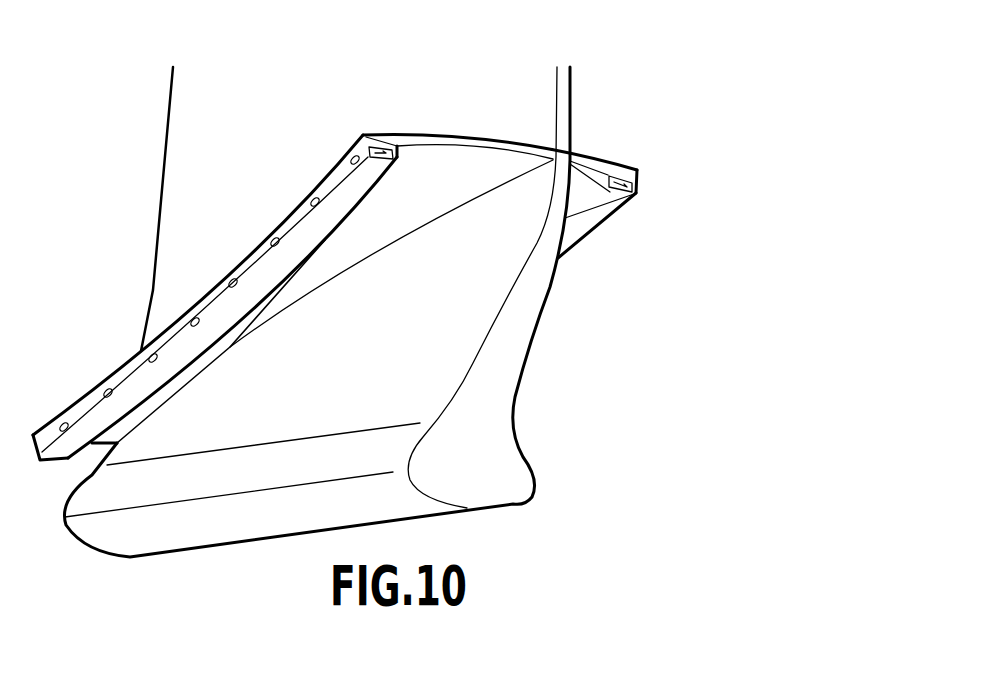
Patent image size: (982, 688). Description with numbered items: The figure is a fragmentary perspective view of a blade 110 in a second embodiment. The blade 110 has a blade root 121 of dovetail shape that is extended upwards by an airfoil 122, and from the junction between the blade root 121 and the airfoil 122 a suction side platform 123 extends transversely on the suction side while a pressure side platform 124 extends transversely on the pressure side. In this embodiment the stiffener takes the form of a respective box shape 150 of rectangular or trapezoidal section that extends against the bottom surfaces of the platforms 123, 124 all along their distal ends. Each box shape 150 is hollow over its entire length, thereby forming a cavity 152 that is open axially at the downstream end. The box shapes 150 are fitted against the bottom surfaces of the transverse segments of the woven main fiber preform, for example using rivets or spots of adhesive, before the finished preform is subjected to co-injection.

The blade 110 is at (719, 61).
The blade root 121 is at (490, 423).
The airfoil 122 is at (185, 165).
The suction side platform 123 is at (493, 136).
The pressure side platform 124 is at (628, 145).
The box shape 150 is at (342, 216).
The cavity 152 is at (383, 147).